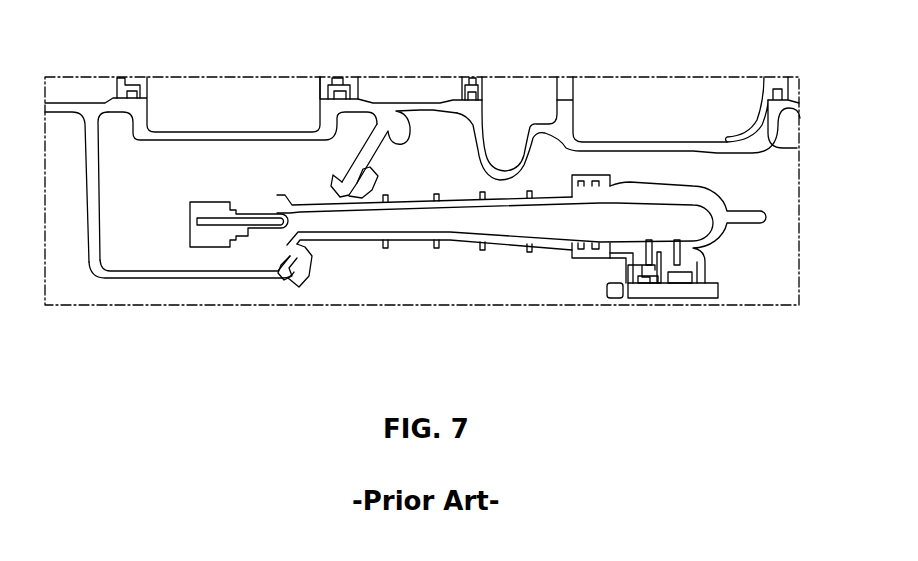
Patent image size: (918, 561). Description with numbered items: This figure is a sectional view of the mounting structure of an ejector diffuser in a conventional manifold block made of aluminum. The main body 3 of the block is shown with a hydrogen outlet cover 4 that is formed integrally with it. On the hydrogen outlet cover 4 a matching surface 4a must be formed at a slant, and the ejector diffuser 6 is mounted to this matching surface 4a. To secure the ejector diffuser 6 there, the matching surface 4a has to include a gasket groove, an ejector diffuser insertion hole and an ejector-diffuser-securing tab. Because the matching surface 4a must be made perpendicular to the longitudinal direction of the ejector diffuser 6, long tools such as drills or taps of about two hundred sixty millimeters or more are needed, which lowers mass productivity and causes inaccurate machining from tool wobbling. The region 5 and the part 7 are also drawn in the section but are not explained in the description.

The main body 3 is at (250, 126).
The hydrogen outlet cover 4 is at (184, 297).
The matching surface 4a is at (380, 142).
The chamber 5 is at (138, 228).
The ejector diffuser 6 is at (463, 237).
The connector 7 is at (205, 205).